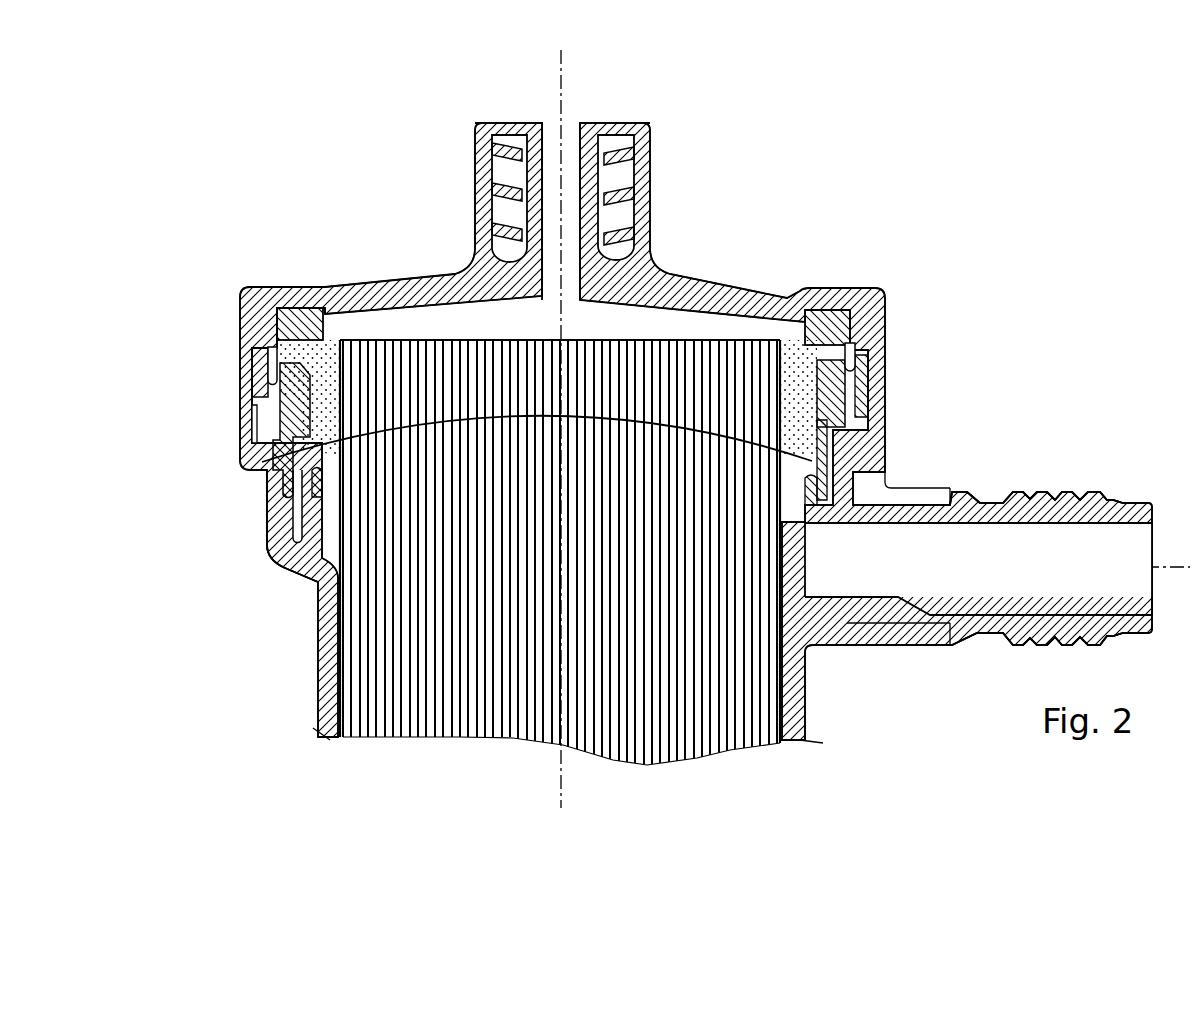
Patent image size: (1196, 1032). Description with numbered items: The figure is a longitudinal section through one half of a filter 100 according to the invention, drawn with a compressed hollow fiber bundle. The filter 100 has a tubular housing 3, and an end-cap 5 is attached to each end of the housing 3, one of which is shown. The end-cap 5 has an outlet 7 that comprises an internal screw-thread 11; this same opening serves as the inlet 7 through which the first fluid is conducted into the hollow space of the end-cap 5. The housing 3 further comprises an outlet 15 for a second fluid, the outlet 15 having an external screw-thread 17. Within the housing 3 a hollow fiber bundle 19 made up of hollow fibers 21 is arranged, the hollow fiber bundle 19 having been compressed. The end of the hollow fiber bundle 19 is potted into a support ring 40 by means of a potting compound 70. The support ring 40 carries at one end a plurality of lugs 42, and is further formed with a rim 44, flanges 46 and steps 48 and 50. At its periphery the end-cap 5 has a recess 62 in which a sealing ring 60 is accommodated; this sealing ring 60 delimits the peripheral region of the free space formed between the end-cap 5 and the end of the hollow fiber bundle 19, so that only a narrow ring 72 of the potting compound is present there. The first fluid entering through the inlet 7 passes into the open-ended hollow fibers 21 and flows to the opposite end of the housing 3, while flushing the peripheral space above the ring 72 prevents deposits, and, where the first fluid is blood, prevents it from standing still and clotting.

The filter 100 is at (366, 139).
The tubular housing 3 is at (795, 712).
The end cap 5 is at (652, 345).
The outlet 7 is at (594, 126).
The internal screw-thread 11 is at (633, 121).
The outlet for a second fluid 15 is at (1122, 503).
The external screw-thread 17 is at (1018, 490).
The hollow fiber bundle 19 is at (692, 780).
The hollow fibers 21 is at (717, 740).
The support ring 40 is at (237, 457).
The lugs 42 is at (268, 522).
The rim 44 is at (262, 404).
The flanges 46 is at (280, 340).
The step 48 is at (265, 385).
The step 50 is at (263, 473).
The sealing ring 60 is at (853, 290).
The recess 62 is at (817, 307).
The potting compound 70 is at (648, 368).
The ring of potting compound 72 is at (325, 290).